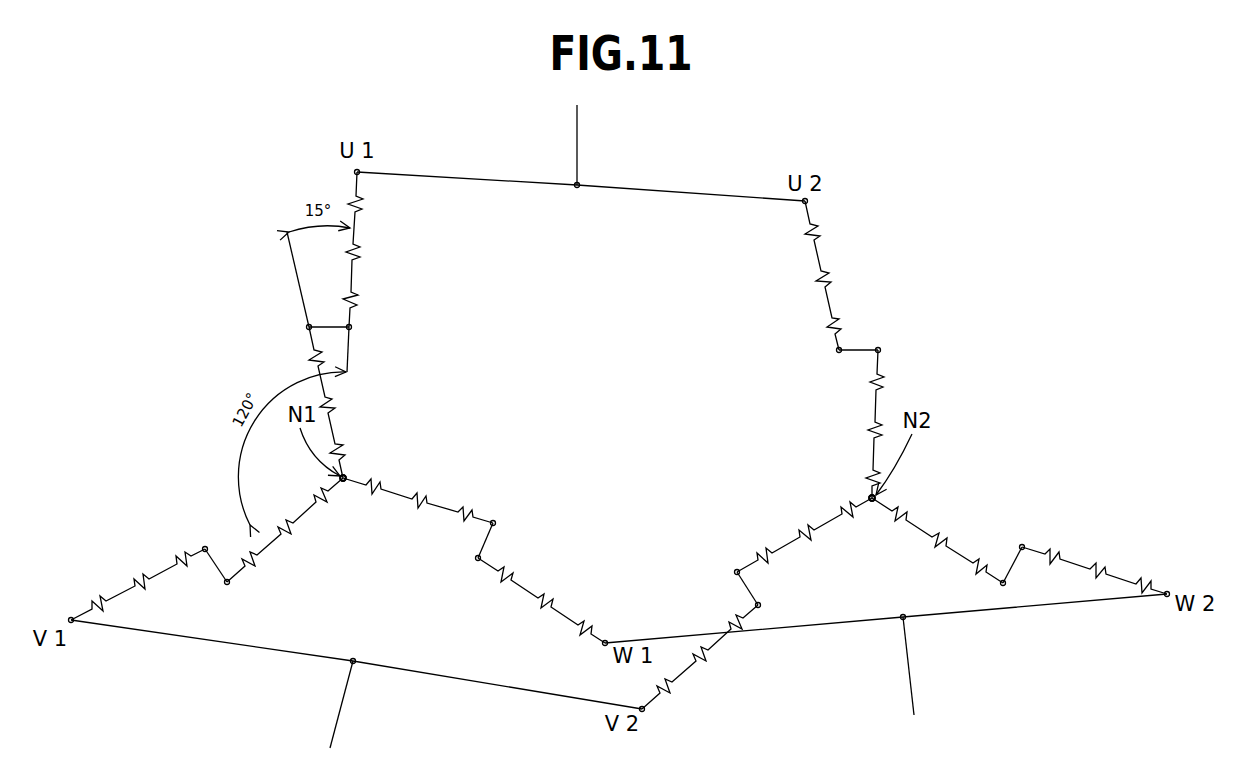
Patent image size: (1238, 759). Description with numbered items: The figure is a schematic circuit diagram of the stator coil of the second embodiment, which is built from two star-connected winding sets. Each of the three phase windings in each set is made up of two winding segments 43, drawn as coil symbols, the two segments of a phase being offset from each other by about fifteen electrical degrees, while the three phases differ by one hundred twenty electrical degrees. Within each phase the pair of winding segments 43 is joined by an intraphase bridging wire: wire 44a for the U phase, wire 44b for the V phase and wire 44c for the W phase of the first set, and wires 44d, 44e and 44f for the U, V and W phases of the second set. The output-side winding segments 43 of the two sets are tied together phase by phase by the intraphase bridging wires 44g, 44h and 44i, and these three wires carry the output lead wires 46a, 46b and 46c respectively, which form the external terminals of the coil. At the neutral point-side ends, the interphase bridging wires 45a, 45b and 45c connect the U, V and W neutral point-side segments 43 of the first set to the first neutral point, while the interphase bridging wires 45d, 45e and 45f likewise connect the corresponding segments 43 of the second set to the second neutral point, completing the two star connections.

The winding segment 43 is at (360, 250).
The intraphase bridging wire 44a is at (333, 322).
The intraphase bridging wire 44b is at (212, 569).
The intraphase bridging wire 44c is at (493, 545).
The intraphase bridging wire 44d is at (855, 345).
The intraphase bridging wire 44e is at (742, 590).
The intraphase bridging wire 44f is at (1003, 565).
The intraphase bridging wire 44g is at (525, 190).
The intraphase bridging wire 44h is at (270, 655).
The intraphase bridging wire 44i is at (831, 625).
The interphase bridging wire 45a is at (350, 478).
The interphase bridging wire 45b is at (336, 490).
The interphase bridging wire 45c is at (352, 492).
The interphase bridging wire 45d is at (868, 492).
The interphase bridging wire 45e is at (865, 508).
The interphase bridging wire 45f is at (878, 500).
The output lead wire 46a is at (573, 143).
The output lead wire 46b is at (358, 697).
The output lead wire 46c is at (916, 665).